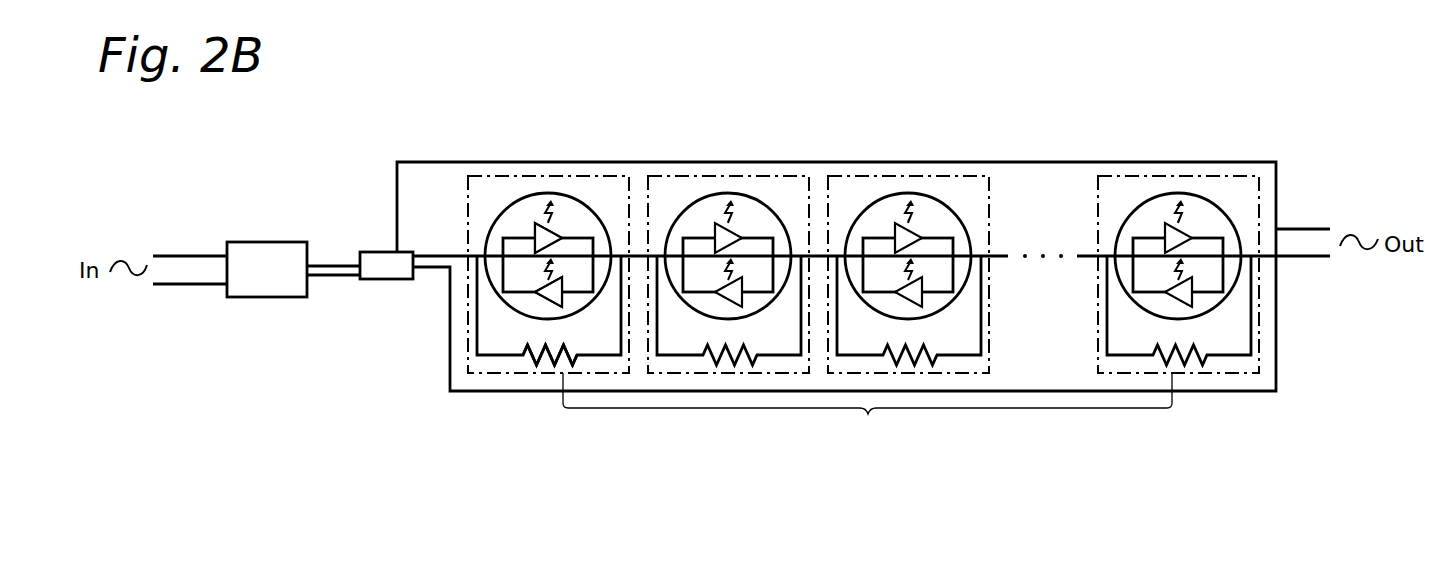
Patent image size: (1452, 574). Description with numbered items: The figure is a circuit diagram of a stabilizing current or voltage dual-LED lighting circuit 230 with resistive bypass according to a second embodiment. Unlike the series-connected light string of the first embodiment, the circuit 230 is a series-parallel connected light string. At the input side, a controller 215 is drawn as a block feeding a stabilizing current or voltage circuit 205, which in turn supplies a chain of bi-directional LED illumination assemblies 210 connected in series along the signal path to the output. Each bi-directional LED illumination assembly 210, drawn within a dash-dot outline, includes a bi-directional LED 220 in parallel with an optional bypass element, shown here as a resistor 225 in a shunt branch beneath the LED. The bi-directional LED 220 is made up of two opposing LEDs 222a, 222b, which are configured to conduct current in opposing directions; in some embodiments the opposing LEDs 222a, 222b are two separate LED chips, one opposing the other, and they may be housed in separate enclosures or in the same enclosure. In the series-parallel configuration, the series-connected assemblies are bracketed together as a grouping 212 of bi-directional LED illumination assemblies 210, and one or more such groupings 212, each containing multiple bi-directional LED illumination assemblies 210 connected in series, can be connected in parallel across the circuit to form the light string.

The controller 215 is at (265, 242).
The stabilizing current or voltage circuit 205 is at (383, 252).
The bi-directional LED 220 is at (515, 198).
The bi-directional LED illumination assembly 210 is at (548, 176).
The opposing LED 222a is at (557, 233).
The opposing LED 222b is at (545, 302).
The resistor 225 is at (552, 360).
The grouping of bi-directional LED illumination assemblies 212 is at (868, 414).
The stabilizing current or voltage dual-LED lighting circuit 230 is at (1302, 125).